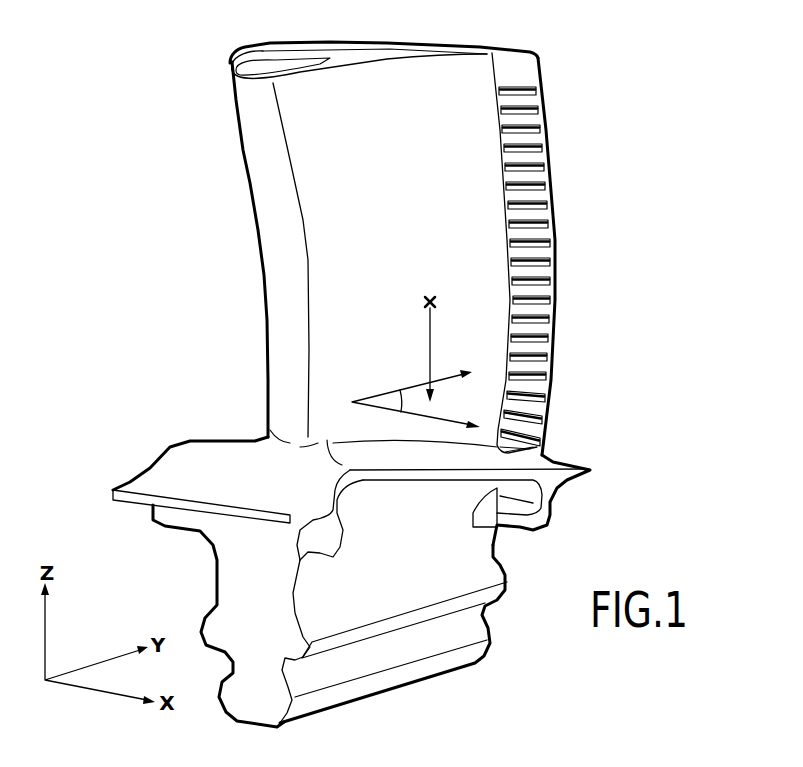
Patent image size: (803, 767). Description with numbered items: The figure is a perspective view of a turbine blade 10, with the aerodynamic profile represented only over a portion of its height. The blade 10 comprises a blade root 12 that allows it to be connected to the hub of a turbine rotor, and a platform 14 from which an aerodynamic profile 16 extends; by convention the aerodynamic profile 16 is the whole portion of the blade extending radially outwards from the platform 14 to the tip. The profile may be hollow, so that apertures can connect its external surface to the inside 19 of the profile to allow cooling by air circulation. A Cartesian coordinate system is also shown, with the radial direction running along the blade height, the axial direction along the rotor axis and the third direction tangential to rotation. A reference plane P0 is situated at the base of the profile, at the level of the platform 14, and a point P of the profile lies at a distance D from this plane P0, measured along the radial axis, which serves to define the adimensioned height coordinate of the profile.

The blade 10 is at (580, 177).
The blade root 12 is at (452, 658).
The platform 14 is at (563, 456).
The aerodynamic profile 16 is at (207, 67).
The inside of the profile 19 is at (275, 63).
The point on blade surface P is at (430, 292).
The distance D is at (430, 350).
The reference plane P0 is at (389, 402).